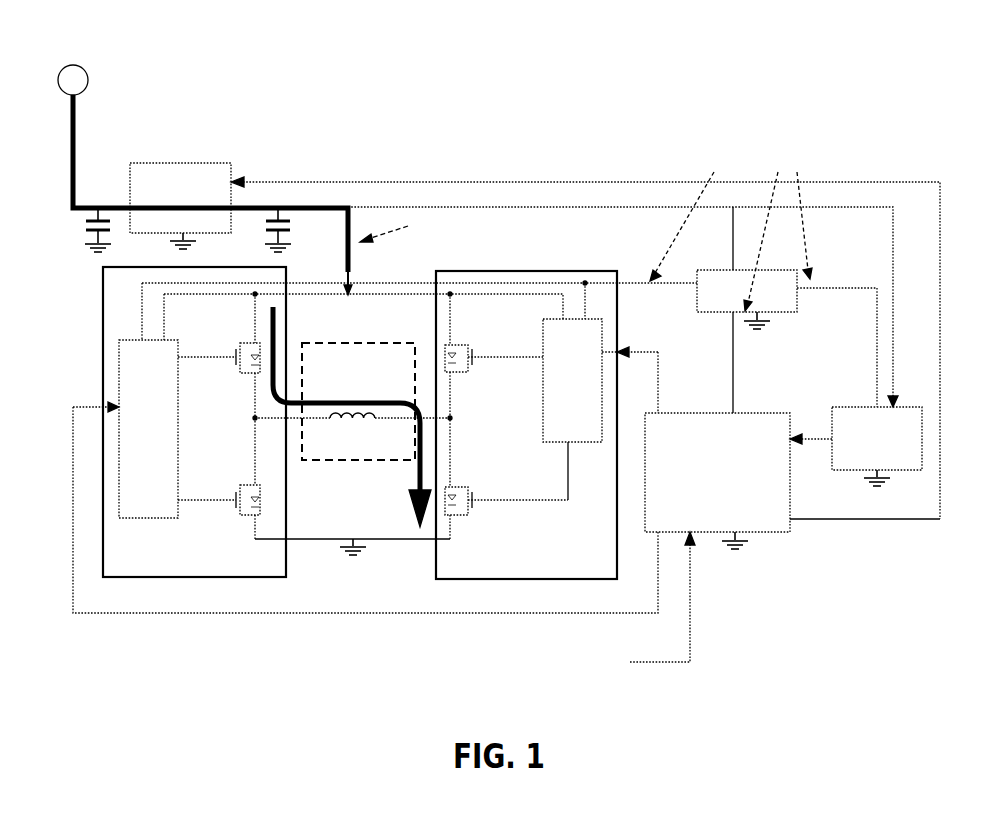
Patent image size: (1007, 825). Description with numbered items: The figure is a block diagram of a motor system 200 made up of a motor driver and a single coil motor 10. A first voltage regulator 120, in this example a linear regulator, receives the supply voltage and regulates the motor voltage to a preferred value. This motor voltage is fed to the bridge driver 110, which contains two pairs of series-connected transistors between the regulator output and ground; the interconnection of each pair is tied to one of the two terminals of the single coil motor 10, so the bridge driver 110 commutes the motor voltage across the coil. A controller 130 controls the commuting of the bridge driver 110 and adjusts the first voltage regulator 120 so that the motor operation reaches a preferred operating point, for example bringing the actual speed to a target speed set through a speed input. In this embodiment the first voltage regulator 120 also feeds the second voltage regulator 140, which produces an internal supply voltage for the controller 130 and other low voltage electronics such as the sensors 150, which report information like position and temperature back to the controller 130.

The motor system 200 is at (690, 80).
The first voltage regulator 120 is at (200, 163).
The second voltage regulator 140 is at (708, 270).
The bridge driver 110 is at (530, 578).
The single coil motor 10 is at (352, 417).
The controller 130 is at (773, 532).
The sensors 150 is at (846, 470).